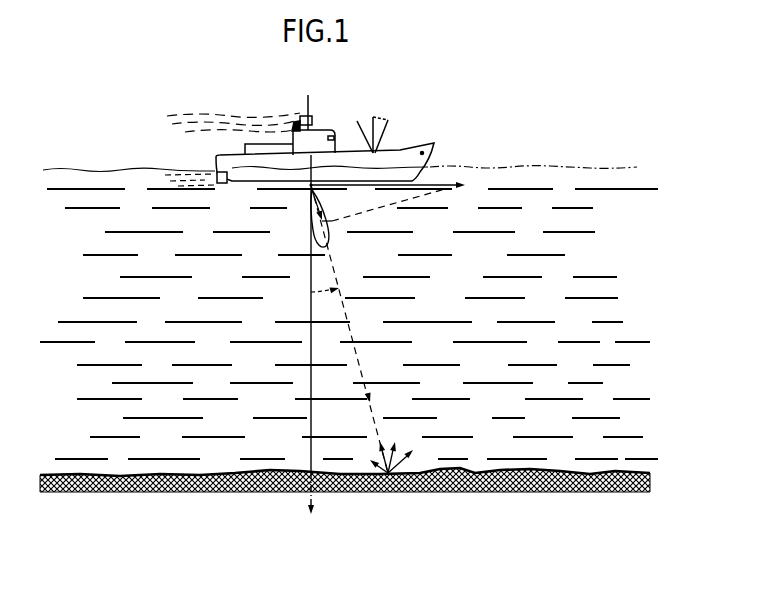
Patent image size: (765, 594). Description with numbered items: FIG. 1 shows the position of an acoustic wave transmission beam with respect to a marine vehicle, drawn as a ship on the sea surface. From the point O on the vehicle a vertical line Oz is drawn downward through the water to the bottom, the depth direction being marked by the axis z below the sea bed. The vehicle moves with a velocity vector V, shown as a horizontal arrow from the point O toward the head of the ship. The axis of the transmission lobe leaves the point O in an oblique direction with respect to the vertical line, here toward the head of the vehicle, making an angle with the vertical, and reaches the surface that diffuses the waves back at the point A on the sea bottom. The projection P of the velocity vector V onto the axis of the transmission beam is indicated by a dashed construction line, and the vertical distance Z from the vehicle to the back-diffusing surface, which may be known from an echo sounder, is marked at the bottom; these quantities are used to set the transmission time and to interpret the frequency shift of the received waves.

The origin of the vertical line O is at (303, 174).
The velocity vector of the vehicle V is at (396, 183).
The projection of the velocity vector on the transmission beam axis P is at (371, 218).
The vertical distance from the vehicle to the back-diffusing surface Z is at (302, 314).
The sea bottom reflection point A is at (402, 457).
The vertical line z is at (309, 505).